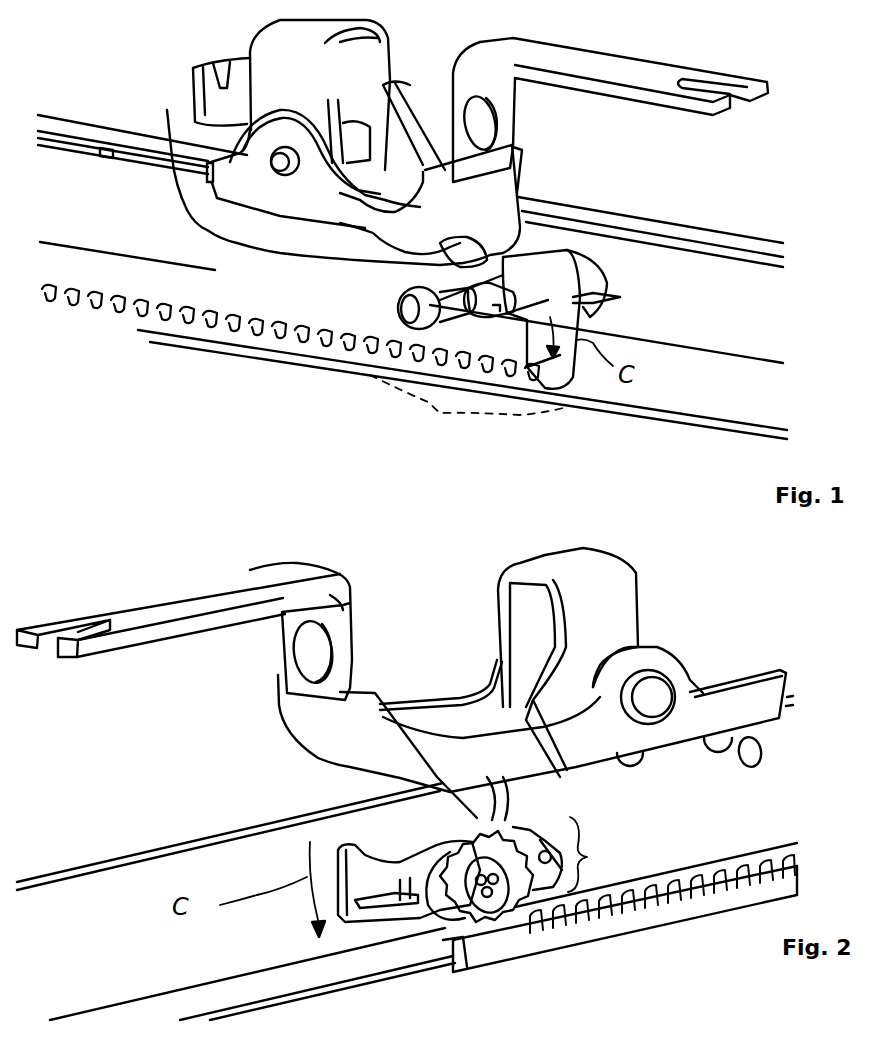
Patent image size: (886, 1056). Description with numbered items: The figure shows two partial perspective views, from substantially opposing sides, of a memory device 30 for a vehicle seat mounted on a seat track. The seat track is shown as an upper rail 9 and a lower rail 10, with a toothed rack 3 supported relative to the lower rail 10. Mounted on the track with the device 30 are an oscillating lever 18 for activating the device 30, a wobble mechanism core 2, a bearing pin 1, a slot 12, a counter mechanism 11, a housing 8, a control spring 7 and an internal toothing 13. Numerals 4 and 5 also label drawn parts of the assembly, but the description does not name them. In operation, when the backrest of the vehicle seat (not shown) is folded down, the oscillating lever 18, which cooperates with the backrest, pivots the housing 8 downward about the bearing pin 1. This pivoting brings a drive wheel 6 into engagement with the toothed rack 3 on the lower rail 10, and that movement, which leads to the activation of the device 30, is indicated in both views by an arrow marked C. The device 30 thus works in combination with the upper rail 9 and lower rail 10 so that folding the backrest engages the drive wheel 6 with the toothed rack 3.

In FIG. 1, the bearing pin 1 is at (418, 300).
In FIG. 1, the wobble mechanism core 2 is at (477, 300).
In FIG. 1, the toothed rack 3 is at (360, 357).
In FIG. 1, the pawl pivot 4 is at (520, 340).
In FIG. 2, the housing bracket 5 is at (517, 568).
In FIG. 2, the drive wheel 6 is at (487, 832).
In FIG. 2, the control spring 7 is at (440, 850).
In FIG. 1, the housing 8 is at (547, 277).
In FIG. 2, the housing 8 is at (290, 997).
In FIG. 1, the upper rail 9 is at (737, 244).
In FIG. 2, the upper rail 9 is at (281, 820).
In FIG. 1, the lower rail 10 is at (726, 390).
In FIG. 2, the lower rail 10 is at (417, 863).
In FIG. 1, the counter mechanism 11 is at (670, 298).
In FIG. 1, the slot 12 is at (520, 340).
In FIG. 1, the internal toothing 13 is at (503, 247).
In FIG. 1, the oscillating lever 18 is at (167, 110).
In FIG. 1, the memory device 30 is at (468, 419).
In FIG. 2, the memory device 30 is at (620, 894).